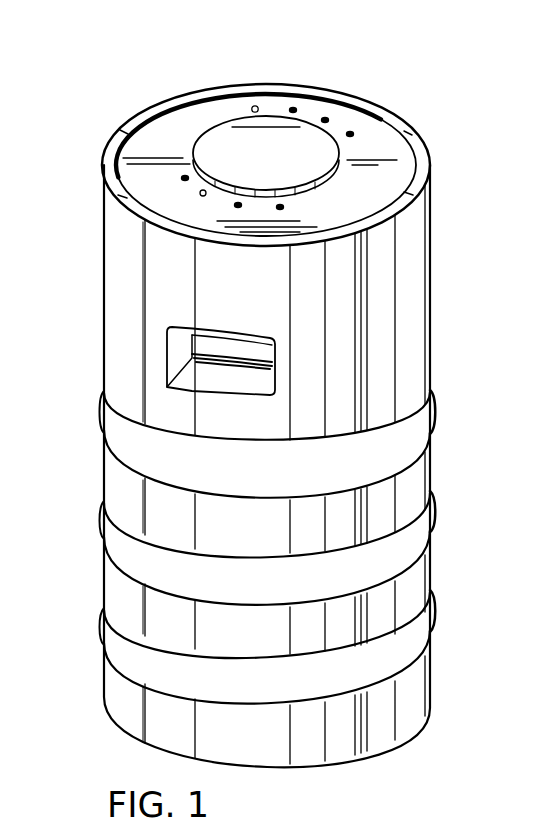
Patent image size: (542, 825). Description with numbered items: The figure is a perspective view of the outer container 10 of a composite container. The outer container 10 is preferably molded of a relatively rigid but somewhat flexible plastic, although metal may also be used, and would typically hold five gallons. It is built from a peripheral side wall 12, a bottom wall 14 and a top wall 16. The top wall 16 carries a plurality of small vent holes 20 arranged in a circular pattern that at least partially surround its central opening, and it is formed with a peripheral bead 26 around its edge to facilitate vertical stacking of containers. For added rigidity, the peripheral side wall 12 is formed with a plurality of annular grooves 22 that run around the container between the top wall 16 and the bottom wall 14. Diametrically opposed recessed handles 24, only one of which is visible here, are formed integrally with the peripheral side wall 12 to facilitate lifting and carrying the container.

The outer container 10 is at (116, 92).
The peripheral side wall 12 is at (418, 245).
The bottom wall 14 is at (402, 738).
The top wall 16 is at (366, 122).
The vent holes 20 is at (253, 105).
The annular grooves 22 is at (430, 393).
The recessed handles 24 is at (188, 392).
The peripheral bead 26 is at (329, 88).